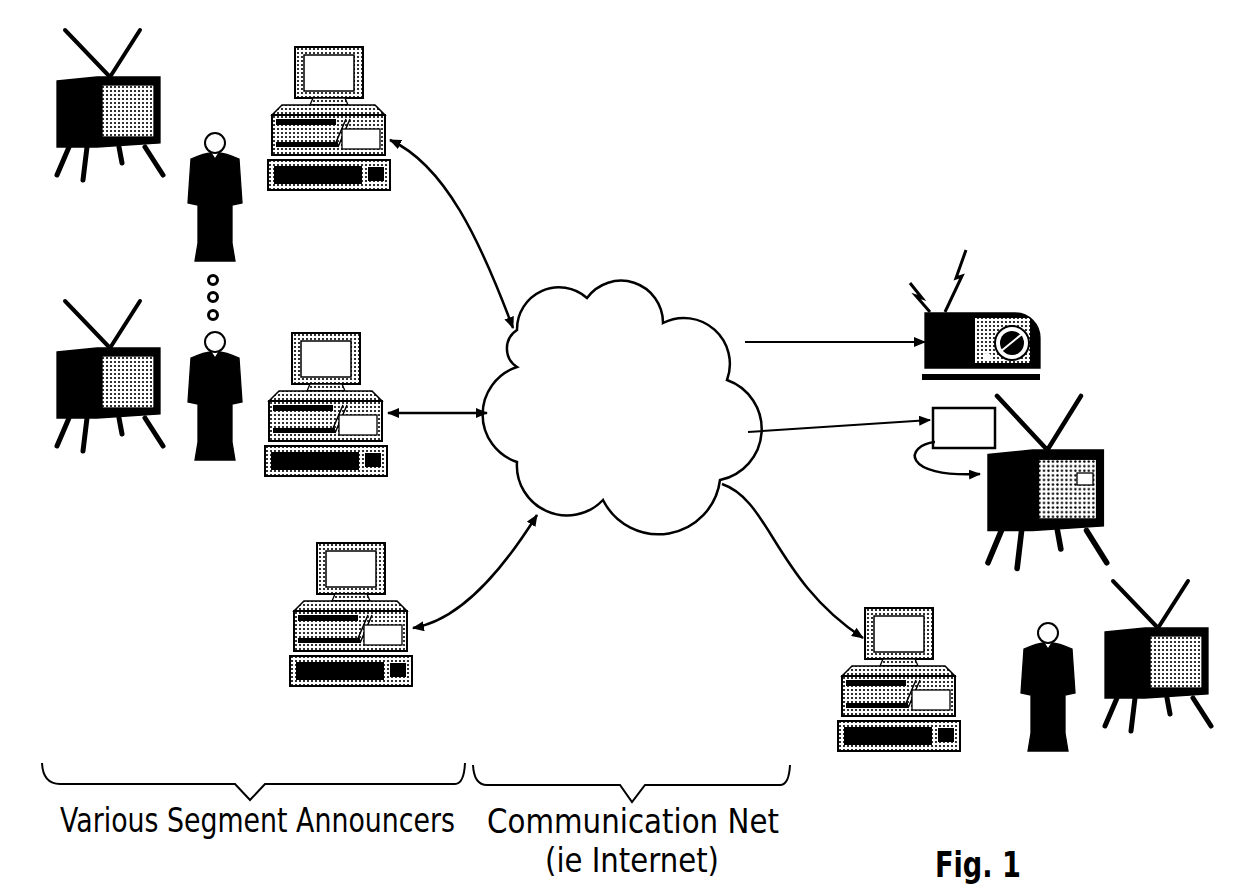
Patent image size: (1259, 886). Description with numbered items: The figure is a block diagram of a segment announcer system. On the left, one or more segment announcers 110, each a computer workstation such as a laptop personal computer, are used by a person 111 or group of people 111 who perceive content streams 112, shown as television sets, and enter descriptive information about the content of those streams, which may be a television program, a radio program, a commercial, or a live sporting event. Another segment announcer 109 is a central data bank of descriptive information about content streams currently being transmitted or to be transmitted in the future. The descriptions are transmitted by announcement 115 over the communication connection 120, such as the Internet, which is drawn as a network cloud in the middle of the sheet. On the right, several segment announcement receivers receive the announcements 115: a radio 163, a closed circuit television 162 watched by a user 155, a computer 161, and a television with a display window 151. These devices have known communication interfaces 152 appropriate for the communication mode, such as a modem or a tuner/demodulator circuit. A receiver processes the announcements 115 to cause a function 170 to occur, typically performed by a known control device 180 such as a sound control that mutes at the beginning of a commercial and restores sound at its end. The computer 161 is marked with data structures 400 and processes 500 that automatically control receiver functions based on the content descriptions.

The segment announcer 109 is at (405, 643).
The segment announcer 110 is at (386, 125).
The person 111 is at (193, 218).
The content stream 112 is at (162, 103).
The announcement 115 is at (659, 389).
The communication connection 120 is at (622, 408).
The television receiver 151 is at (1104, 500).
The communication interface 152 is at (955, 441).
The user 155 is at (1066, 738).
The computer 161 is at (932, 625).
The closed circuit television 162 is at (1199, 625).
The radio 163 is at (1042, 340).
The function 170 is at (1094, 474).
The control device 180 is at (992, 528).
The data structures 400 is at (866, 705).
The processes 500 is at (928, 705).